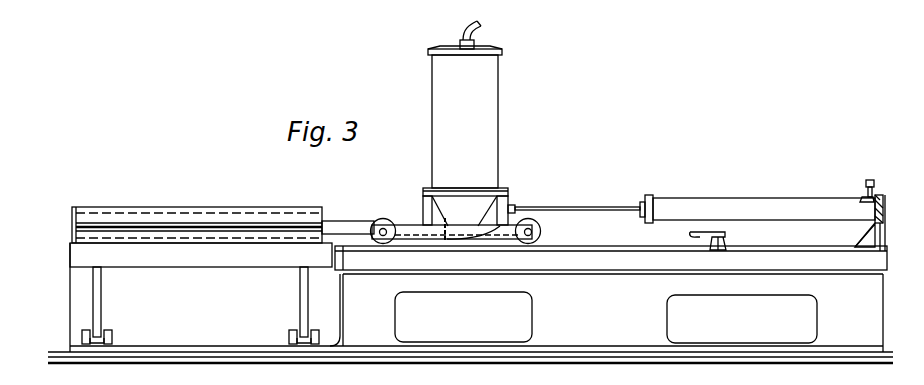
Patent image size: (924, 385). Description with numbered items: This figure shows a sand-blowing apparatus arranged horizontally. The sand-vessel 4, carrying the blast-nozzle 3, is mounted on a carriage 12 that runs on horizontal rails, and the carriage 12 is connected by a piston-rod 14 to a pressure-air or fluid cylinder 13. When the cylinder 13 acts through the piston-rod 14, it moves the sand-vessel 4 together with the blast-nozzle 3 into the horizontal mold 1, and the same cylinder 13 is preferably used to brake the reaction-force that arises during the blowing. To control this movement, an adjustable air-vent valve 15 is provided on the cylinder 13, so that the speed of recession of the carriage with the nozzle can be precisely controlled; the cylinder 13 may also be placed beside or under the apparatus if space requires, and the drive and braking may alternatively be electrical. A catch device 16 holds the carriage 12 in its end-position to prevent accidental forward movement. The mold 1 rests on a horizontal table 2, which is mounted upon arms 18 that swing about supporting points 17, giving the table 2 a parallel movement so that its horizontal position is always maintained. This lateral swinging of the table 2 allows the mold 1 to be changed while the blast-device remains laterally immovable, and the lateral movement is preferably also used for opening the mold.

The horizontal mold 1 is at (181, 207).
The horizontal table 2 is at (199, 265).
The blast-nozzle 3 is at (343, 222).
The sand-vessel 4 is at (498, 126).
The carriage 12 is at (423, 203).
The pressure-air or fluid cylinder 13 is at (748, 200).
The piston-rod 14 is at (572, 208).
The adjustable air-vent valve 15 is at (860, 187).
The catch device 16 is at (722, 235).
The supporting points 17 is at (112, 337).
The arms 18 is at (101, 297).